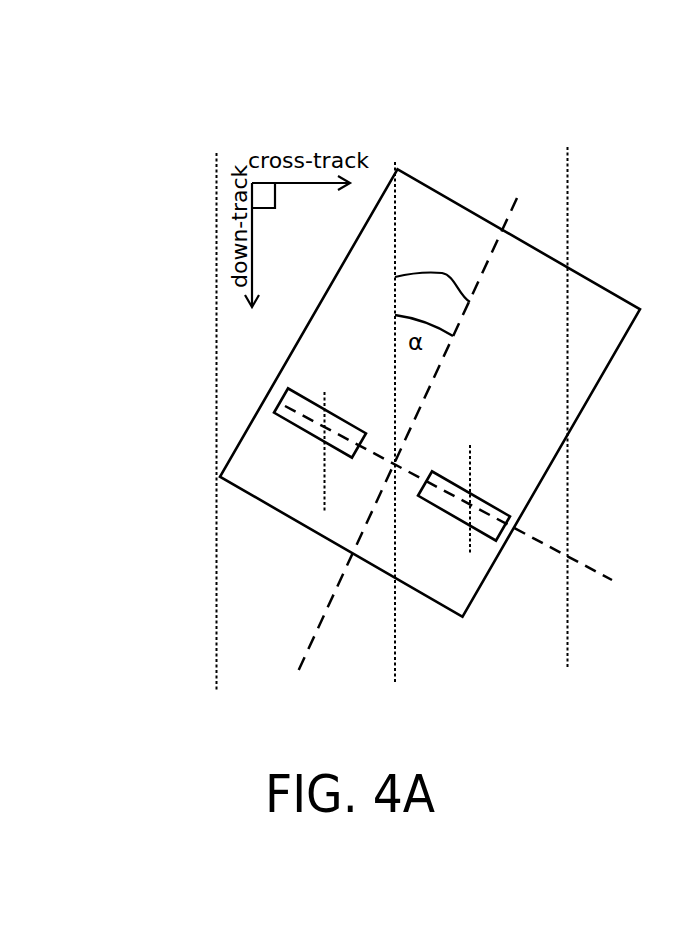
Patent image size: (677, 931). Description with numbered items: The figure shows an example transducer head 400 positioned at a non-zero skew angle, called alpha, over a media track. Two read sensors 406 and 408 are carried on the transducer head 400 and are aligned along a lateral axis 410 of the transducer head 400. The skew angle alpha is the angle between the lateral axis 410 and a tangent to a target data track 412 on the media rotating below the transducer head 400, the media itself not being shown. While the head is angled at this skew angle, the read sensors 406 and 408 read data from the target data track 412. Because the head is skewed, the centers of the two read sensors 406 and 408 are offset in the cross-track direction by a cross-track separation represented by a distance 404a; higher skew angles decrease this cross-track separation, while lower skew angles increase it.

The transducer head 400 is at (249, 139).
The cross-track separation distance 404a is at (324, 510).
The read sensor 406 is at (500, 532).
The read sensor 408 is at (302, 396).
The lateral axis 410 is at (248, 392).
The target data track 412 is at (470, 302).